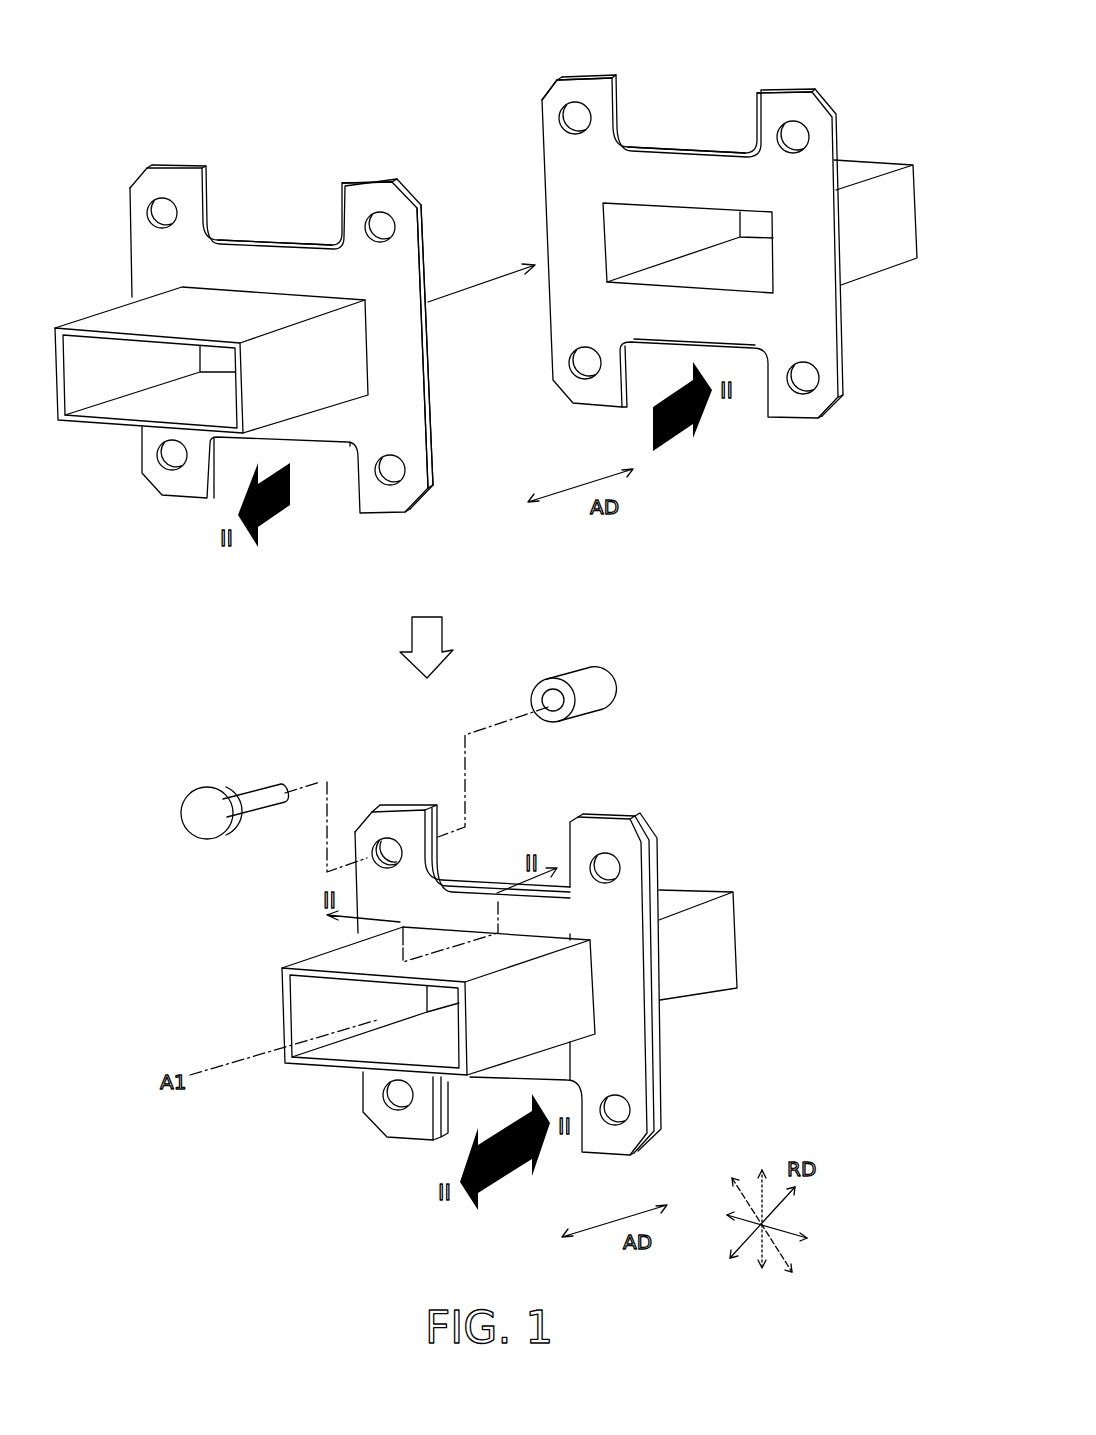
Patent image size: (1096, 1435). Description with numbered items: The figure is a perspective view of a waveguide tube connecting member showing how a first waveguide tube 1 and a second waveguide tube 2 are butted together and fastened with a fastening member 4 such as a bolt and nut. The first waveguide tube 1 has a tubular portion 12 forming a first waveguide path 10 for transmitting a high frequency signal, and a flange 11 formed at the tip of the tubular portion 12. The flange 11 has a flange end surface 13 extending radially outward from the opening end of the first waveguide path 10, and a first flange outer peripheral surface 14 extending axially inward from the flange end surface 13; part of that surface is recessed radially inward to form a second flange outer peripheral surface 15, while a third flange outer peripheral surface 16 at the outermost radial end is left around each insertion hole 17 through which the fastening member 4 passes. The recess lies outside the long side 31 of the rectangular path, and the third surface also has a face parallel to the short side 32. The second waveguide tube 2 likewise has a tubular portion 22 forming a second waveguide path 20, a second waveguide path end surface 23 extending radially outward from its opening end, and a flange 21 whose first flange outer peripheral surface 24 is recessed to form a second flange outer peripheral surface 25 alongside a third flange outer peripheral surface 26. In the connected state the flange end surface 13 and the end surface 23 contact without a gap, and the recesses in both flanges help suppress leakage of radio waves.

The first waveguide tube 1 is at (325, 654).
The second waveguide tube 2 is at (689, 577).
The fastening member 4 is at (190, 822).
The first waveguide path 10 is at (122, 412).
The flange 11 is at (137, 245).
The tubular portion 12 is at (325, 693).
The flange end surface 13 is at (428, 380).
The first flange outer peripheral surface 14 is at (305, 166).
The second flange outer peripheral surface 15 is at (270, 240).
The third flange outer peripheral surface 16 is at (364, 160).
The insertion hole 17 is at (155, 207).
The second waveguide path 20 is at (631, 238).
The flange 21 is at (555, 80).
The tubular portion 22 is at (880, 170).
The second waveguide path end surface 23 is at (568, 173).
The first flange outer peripheral surface 24 is at (720, 76).
The second flange outer peripheral surface 25 is at (680, 147).
The third flange outer peripheral surface 26 is at (778, 69).
The long side 31 is at (302, 968).
The short side 32 is at (290, 1010).